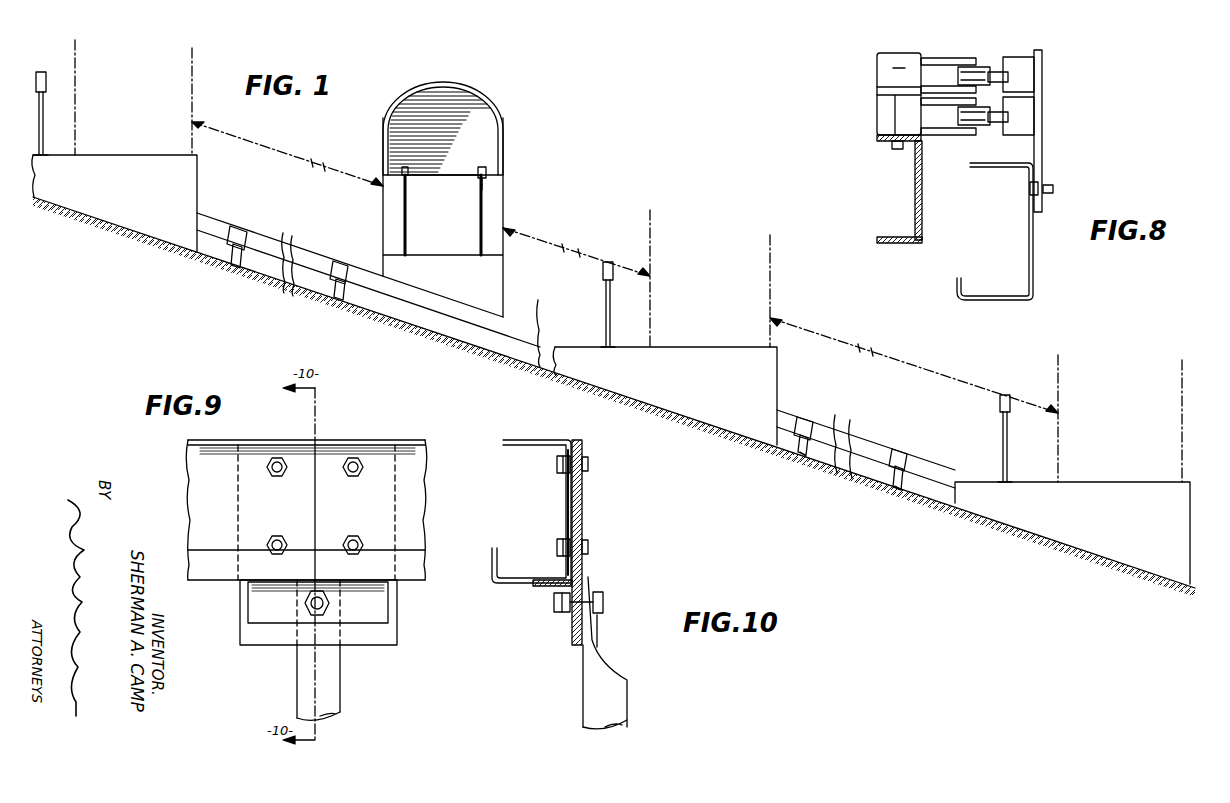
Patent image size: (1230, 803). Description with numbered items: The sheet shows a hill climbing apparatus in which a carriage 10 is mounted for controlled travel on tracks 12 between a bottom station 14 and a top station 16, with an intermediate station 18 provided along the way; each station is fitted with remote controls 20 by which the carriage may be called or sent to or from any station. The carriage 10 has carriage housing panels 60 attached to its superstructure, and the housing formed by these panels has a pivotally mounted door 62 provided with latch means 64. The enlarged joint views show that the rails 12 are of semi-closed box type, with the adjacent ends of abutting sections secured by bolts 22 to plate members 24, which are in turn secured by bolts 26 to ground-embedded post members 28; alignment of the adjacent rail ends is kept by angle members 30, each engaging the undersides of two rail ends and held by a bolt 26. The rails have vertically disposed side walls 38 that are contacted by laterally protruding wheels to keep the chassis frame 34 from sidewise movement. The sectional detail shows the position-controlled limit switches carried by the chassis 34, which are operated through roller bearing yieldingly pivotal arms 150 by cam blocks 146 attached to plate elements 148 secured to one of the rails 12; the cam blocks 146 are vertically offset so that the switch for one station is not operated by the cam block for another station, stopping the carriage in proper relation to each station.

In FIG. 1, the carriage 10 is at (448, 199).
In FIG. 1, the tracks 12 is at (520, 327).
In FIG. 8, the tracks 12 is at (1036, 262).
In FIG. 9, the tracks 12 is at (416, 440).
In FIG. 10, the tracks 12 is at (540, 440).
In FIG. 1, the bottom station 14 is at (1098, 482).
In FIG. 1, the top station 16 is at (143, 155).
In FIG. 1, the intermediate station 18 is at (710, 347).
In FIG. 1, the remote controls 20 is at (41, 72).
In FIG. 9, the bolts 22 is at (348, 537).
In FIG. 10, the bolts 22 is at (590, 470).
In FIG. 1, the plate members 24 is at (806, 420).
In FIG. 9, the plate members 24 is at (318, 612).
In FIG. 10, the plate members 24 is at (580, 530).
In FIG. 9, the bolts 26 is at (329, 603).
In FIG. 10, the bolts 26 is at (603, 600).
In FIG. 1, the post members 28 is at (803, 456).
In FIG. 9, the post members 28 is at (318, 682).
In FIG. 10, the post members 28 is at (625, 680).
In FIG. 9, the angle members 30 is at (388, 612).
In FIG. 10, the angle members 30 is at (545, 586).
In FIG. 8, the chassis frame 34 is at (925, 229).
In FIG. 10, the side walls 38 is at (565, 508).
In FIG. 1, the carriage housing panels 60 is at (383, 172).
In FIG. 1, the door 62 is at (443, 196).
In FIG. 1, the latch means 64 is at (481, 167).
In FIG. 8, the cam blocks 146 is at (1033, 110).
In FIG. 8, the plate elements 148 is at (1041, 155).
In FIG. 8, the roller bearing yieldingly pivotal arms 150 is at (983, 68).